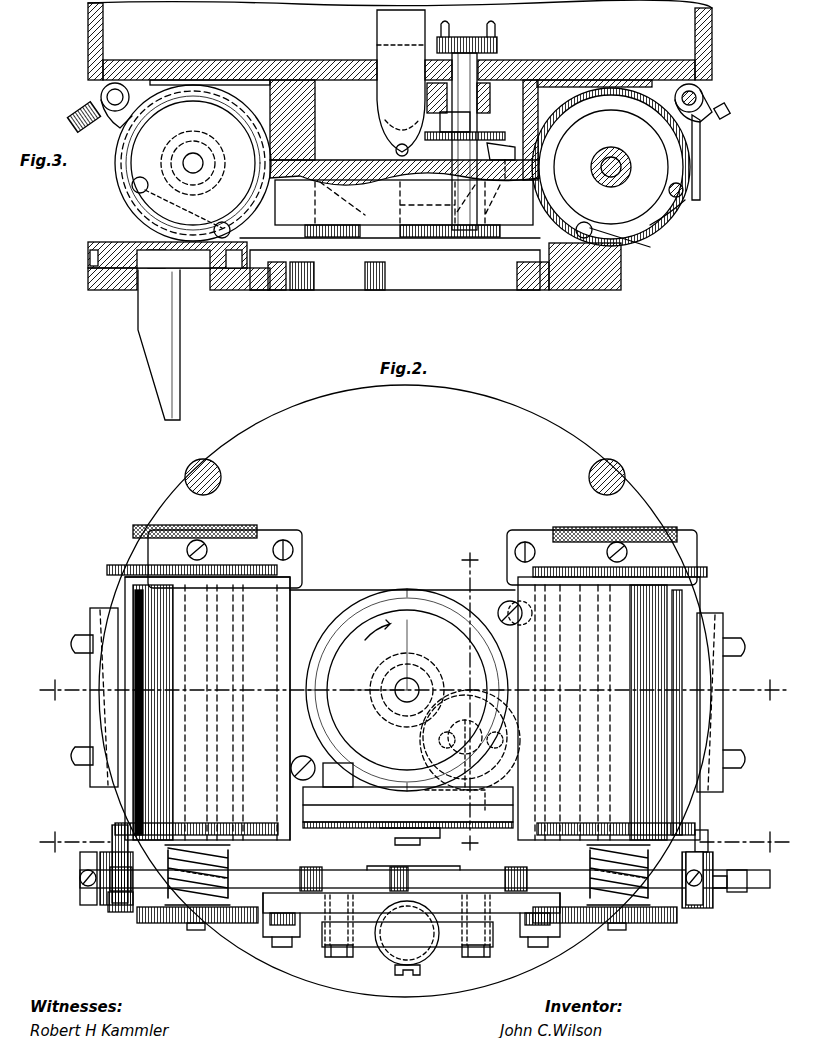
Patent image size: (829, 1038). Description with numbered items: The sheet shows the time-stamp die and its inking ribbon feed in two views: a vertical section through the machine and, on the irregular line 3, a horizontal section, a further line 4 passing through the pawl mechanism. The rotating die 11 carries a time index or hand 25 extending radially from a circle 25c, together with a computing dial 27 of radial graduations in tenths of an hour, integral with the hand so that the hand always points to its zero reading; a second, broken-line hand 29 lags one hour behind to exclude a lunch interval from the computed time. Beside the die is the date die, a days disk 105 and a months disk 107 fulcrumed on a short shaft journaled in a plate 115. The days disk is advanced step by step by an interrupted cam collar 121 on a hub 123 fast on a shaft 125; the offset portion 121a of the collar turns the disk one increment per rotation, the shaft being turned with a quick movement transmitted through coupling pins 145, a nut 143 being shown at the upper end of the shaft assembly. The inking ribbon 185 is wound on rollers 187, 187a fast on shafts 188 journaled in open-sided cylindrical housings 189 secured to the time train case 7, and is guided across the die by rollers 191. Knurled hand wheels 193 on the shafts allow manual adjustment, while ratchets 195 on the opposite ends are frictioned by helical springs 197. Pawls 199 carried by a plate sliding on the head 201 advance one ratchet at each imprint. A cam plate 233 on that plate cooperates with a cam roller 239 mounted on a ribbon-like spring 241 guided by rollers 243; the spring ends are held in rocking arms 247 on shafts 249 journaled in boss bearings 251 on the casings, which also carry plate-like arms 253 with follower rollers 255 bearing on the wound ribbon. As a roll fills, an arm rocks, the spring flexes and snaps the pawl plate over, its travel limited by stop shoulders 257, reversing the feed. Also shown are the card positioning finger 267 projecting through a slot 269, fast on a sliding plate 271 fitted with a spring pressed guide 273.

In FIG. 3, the time train case 7 is at (706, 60).
In FIG. 3, the die 11 is at (494, 234).
In FIG. 2, the time index or hand 25 is at (407, 633).
In FIG. 2, the circle 25c is at (398, 704).
In FIG. 2, the computing dial 27 is at (340, 618).
In FIG. 2, the additional hand 29 is at (430, 644).
In FIG. 2, the days disk 105 is at (360, 805).
In FIG. 2, the months disk 107 is at (380, 812).
In FIG. 3, the plate 115 is at (480, 108).
In FIG. 3, the interrupted cam collar 121 is at (500, 133).
In FIG. 3, the offset portion 121a is at (508, 148).
In FIG. 3, the hub 123 is at (462, 152).
In FIG. 3, the shaft 125 is at (485, 112).
In FIG. 3, the knurled nut 143 is at (497, 46).
In FIG. 3, the coupling pins 145 is at (490, 30).
In FIG. 3, the inking ribbon 185 is at (602, 231).
In FIG. 3, the roller 187 is at (137, 210).
In FIG. 3, the roller 187a is at (662, 208).
In FIG. 3, the shaft 188 is at (195, 161).
In FIG. 3, the cylindrical housing 189 is at (232, 102).
In FIG. 3, the guide roller 191 is at (223, 222).
In FIG. 2, the hand wheel 193 is at (236, 526).
In FIG. 2, the ratchet 195 is at (150, 924).
In FIG. 2, the helical spring 197 is at (224, 862).
In FIG. 2, the pawl 199 is at (283, 906).
In FIG. 2, the head 201 is at (367, 918).
In FIG. 2, the cam plate 233 is at (462, 869).
In FIG. 2, the cam roller 239 is at (405, 872).
In FIG. 2, the ribbon-like spring 241 is at (252, 882).
In FIG. 2, the guide roller 243 is at (312, 880).
In FIG. 2, the rocking arm 247 is at (88, 900).
In FIG. 2, the shaft 249 is at (112, 835).
In FIG. 3, the boss bearing 251 is at (101, 94).
In FIG. 3, the plate-like arm 253 is at (110, 128).
In FIG. 3, the follower roller 255 is at (132, 187).
In FIG. 2, the stop shoulder 257 is at (326, 941).
In FIG. 3, the positioning finger 267 is at (152, 350).
In FIG. 3, the slot 269 is at (192, 283).
In FIG. 3, the sliding plate 271 is at (112, 267).
In FIG. 3, the spring pressed guide 273 is at (245, 256).
In FIG. 2, the section line 3- 3 is at (404, 690).
In FIG. 2, the section line 4- 4 is at (413, 842).